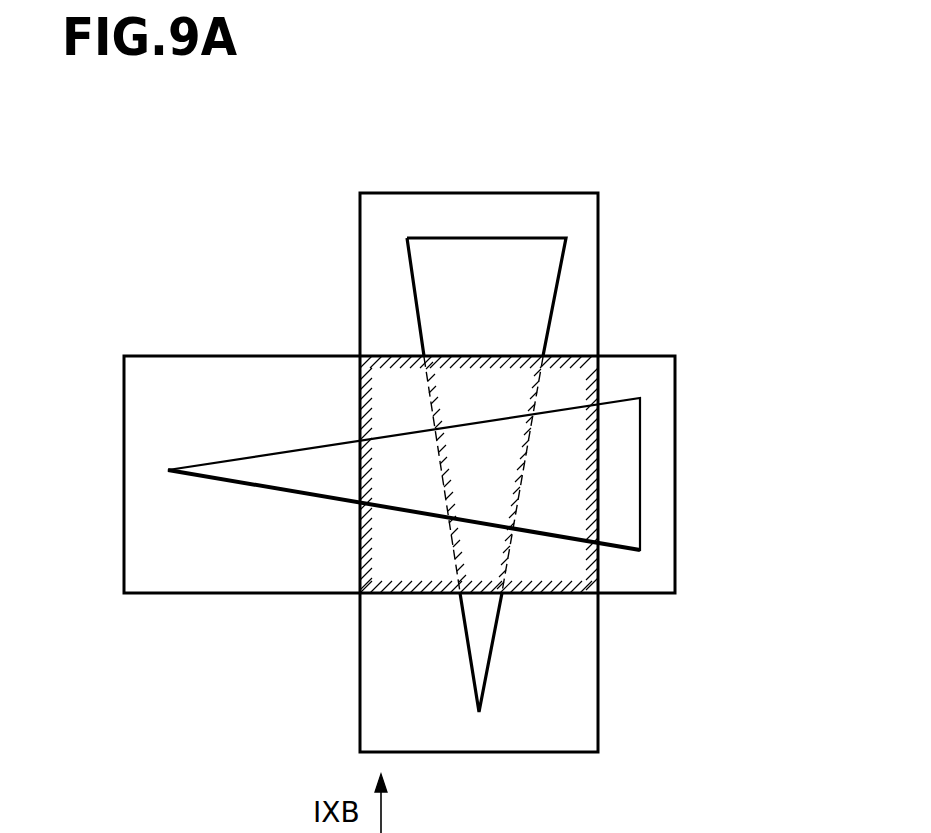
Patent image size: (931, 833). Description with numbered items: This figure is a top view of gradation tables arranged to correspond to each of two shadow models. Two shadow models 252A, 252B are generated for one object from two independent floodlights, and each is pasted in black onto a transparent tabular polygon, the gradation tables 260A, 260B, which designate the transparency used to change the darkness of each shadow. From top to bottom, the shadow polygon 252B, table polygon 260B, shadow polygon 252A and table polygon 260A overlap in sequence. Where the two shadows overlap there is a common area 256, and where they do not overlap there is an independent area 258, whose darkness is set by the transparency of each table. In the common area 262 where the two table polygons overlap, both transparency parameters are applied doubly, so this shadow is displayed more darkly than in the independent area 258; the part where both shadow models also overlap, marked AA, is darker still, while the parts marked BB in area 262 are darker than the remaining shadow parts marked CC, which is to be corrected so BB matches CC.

The shadow model 252A is at (522, 250).
The shadow model 252B is at (302, 498).
The common area 256 is at (492, 450).
The independent area 258 is at (447, 255).
The gradation table 260A is at (598, 270).
The gradation table 260B is at (174, 585).
The common area 262 is at (577, 388).